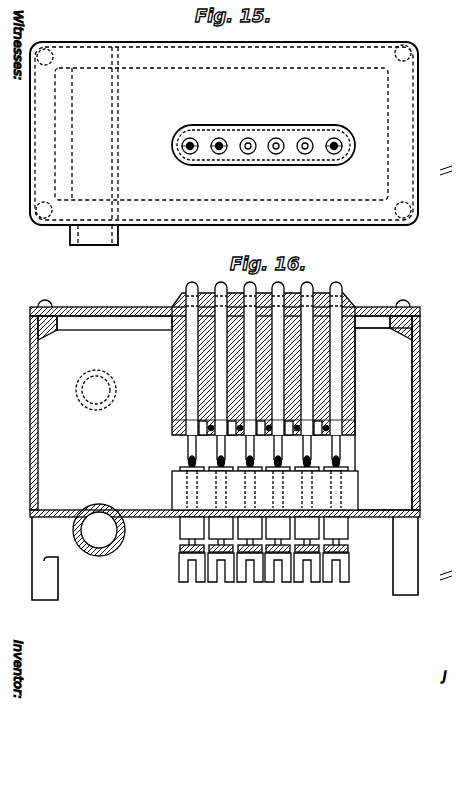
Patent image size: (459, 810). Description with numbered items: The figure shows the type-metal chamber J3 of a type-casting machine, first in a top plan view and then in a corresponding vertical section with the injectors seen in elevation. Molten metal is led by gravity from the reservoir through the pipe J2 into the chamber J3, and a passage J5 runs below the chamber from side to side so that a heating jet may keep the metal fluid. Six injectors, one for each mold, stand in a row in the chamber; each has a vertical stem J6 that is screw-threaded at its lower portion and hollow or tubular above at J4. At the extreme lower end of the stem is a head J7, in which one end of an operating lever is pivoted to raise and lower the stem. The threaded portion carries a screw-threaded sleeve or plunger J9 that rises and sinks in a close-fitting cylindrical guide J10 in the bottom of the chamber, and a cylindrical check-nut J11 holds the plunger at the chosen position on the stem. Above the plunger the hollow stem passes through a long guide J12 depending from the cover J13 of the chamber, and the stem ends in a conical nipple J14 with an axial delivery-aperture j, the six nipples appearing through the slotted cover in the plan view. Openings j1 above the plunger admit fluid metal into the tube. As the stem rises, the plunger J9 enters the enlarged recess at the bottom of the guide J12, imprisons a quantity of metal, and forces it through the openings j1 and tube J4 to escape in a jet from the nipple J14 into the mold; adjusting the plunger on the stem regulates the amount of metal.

In FIG. 15, the chamber J3 is at (224, 144).
In FIG. 16, the chamber J3 is at (172, 430).
In FIG. 15, the cover J13 is at (241, 153).
In FIG. 16, the cover J13 is at (378, 306).
In FIG. 15, the conical nipple J14 is at (191, 137).
In FIG. 16, the conical nipple J14 is at (190, 287).
In FIG. 15, the axial delivery-aperture j is at (222, 140).
In FIG. 16, the tubular portion of stem J4 is at (186, 378).
In FIG. 16, the long guide J12 is at (358, 350).
In FIG. 16, the pipe J2 is at (182, 424).
In FIG. 16, the passage J5 is at (99, 530).
In FIG. 16, the vertical stem J6 is at (188, 455).
In FIG. 16, the openings j1 is at (222, 462).
In FIG. 16, the screw-threaded sleeve or plunger J9 is at (350, 470).
In FIG. 16, the cylindrical guide J10 is at (176, 481).
In FIG. 16, the cylindrical check-nut J11 is at (350, 532).
In FIG. 16, the head J7 is at (264, 578).